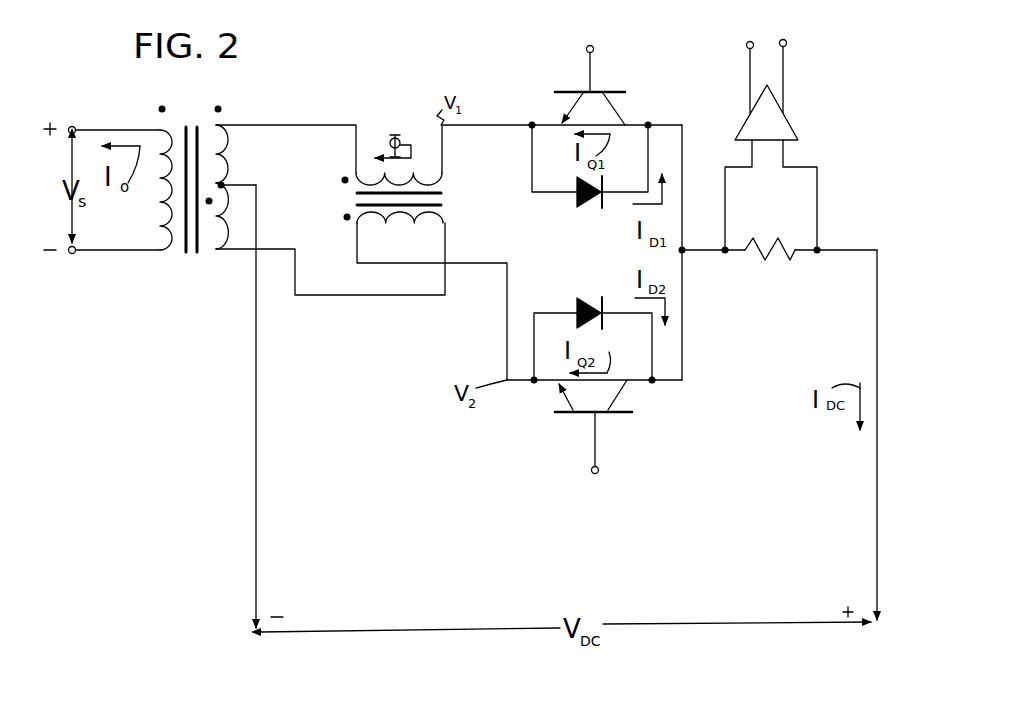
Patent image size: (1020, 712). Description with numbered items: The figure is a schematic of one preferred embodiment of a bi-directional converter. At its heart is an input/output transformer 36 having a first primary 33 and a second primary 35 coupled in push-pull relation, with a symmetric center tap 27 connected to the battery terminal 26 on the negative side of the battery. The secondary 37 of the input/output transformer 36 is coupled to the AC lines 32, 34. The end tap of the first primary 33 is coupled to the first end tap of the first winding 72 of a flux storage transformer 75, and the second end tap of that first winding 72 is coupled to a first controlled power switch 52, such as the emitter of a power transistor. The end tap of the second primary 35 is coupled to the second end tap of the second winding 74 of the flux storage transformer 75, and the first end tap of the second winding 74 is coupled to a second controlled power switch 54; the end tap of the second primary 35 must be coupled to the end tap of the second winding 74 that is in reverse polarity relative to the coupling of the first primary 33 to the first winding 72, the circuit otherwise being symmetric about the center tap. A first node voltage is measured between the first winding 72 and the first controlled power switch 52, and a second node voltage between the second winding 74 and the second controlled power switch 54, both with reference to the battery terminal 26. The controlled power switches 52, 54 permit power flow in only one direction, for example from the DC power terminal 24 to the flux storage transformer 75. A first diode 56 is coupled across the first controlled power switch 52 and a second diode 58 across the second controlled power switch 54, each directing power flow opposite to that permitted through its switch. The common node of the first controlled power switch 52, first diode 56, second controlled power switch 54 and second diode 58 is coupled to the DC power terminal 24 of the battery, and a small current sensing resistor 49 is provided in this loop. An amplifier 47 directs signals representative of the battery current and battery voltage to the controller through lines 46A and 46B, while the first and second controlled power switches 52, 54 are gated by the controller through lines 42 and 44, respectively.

The DC power terminal 24 is at (875, 617).
The battery terminal 26 is at (253, 629).
The symmetric center tap 27 is at (223, 185).
The AC line 32 is at (72, 126).
The first primary 33 is at (216, 125).
The AC line 34 is at (72, 254).
The second primary 35 is at (215, 251).
The input/output transformer 36 is at (187, 260).
The secondary 37 is at (169, 253).
The gating line 42 is at (594, 55).
The gating line 44 is at (599, 470).
The signal line 46A is at (746, 49).
The signal line 46B is at (786, 62).
The amplifier 47 is at (789, 117).
The current sensing resistor 49 is at (773, 256).
The first controlled power switch 52 is at (618, 90).
The second controlled power switch 54 is at (577, 416).
The first diode 56 is at (588, 209).
The second diode 58 is at (592, 300).
The first winding 72 is at (403, 173).
The second winding 74 is at (358, 224).
The flux storage transformer 75 is at (449, 198).